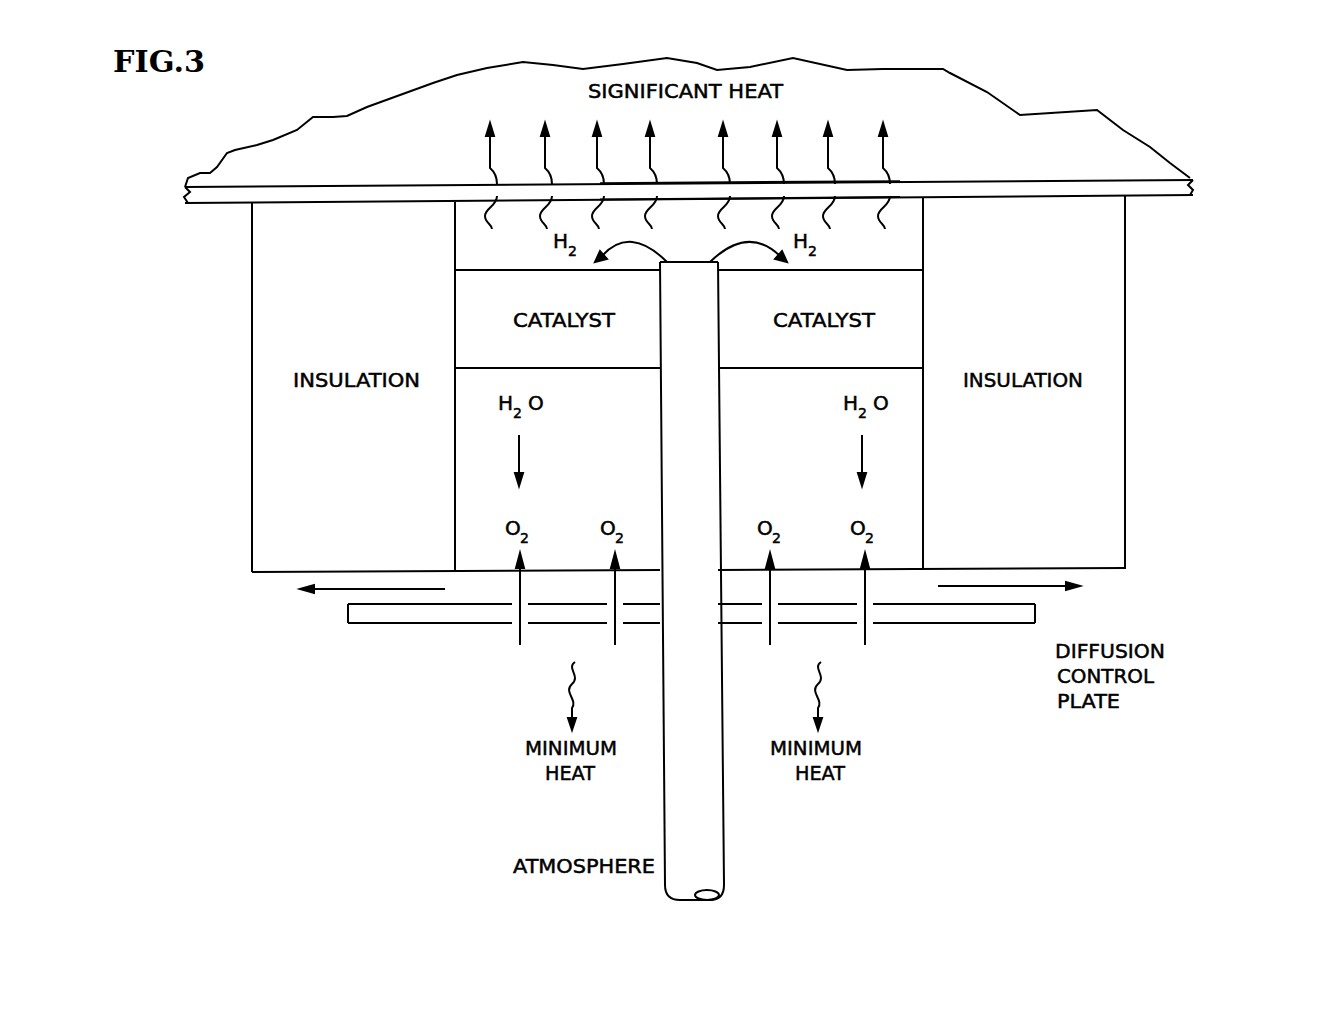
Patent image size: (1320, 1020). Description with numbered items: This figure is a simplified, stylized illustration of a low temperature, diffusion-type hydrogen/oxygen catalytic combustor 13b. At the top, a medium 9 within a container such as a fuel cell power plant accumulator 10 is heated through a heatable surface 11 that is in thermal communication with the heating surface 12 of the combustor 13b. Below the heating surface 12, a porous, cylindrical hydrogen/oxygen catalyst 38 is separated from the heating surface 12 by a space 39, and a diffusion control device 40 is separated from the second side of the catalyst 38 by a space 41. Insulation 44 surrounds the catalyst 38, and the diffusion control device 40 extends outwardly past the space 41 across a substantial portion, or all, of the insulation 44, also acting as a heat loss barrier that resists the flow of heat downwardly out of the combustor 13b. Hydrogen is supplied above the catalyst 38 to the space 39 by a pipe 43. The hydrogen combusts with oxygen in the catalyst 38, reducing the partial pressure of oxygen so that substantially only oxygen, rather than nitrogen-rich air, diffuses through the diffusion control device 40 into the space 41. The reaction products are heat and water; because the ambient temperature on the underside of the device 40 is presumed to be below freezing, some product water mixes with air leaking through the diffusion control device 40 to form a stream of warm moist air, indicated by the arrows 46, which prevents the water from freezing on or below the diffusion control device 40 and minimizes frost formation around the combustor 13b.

The medium 9 is at (692, 137).
The fuel cell power plant accumulator 10 is at (1178, 208).
The heatable surface 11 is at (737, 184).
The heating surface 12 is at (769, 196).
The low temperature, diffusion-type combustor 13b is at (1203, 375).
The hydrogen/oxygen catalyst 38 is at (807, 356).
The space 39 is at (535, 240).
The diffusion control device 40 is at (950, 624).
The space 41 is at (598, 460).
The pipe 43 is at (713, 855).
The insulation 44 is at (1043, 456).
The arrows 46 is at (336, 592).